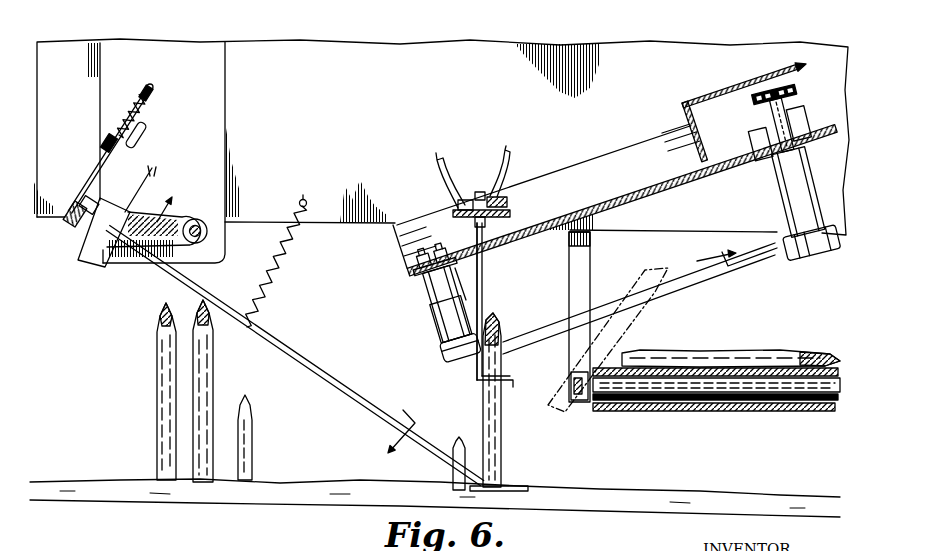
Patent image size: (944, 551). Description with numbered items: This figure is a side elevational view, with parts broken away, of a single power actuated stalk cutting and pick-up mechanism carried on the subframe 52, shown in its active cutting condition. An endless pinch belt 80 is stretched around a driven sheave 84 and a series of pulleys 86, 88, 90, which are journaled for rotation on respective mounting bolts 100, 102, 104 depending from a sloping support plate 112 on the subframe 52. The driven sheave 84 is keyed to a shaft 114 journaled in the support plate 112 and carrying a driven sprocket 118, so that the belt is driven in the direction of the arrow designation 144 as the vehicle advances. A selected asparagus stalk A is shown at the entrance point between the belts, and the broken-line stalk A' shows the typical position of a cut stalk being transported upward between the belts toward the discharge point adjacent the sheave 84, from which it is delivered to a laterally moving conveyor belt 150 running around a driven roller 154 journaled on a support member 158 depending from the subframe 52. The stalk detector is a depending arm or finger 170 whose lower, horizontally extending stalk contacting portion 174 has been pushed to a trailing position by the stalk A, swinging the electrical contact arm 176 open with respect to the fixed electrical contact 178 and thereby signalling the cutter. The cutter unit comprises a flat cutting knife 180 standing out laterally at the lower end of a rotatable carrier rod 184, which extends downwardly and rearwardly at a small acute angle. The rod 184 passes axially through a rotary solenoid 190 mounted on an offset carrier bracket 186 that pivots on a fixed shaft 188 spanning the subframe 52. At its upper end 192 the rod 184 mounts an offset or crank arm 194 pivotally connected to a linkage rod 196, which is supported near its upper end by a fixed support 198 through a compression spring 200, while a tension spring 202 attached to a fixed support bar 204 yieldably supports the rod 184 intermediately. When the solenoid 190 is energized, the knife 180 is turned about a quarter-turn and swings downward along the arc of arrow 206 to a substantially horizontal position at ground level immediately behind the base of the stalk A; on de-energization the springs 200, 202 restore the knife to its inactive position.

The subframe 52 is at (382, 117).
The endless pinch belt 80 is at (703, 280).
The driven sheave 84 is at (818, 264).
The pulley 86 is at (780, 276).
The pulley 88 is at (445, 347).
The pulley 90 is at (457, 335).
The mounting bolt 100 is at (770, 192).
The mounting bolt 102 is at (425, 298).
The mounting bolt 104 is at (457, 280).
The sloping support plate 112 is at (627, 188).
The shaft 114 is at (797, 165).
The driven sprocket 118 is at (787, 95).
The arrow designation 144 is at (697, 261).
The conveyor belt 150 is at (712, 412).
The driven roller 154 is at (625, 408).
The support member 158 is at (590, 256).
The depending arm (finger) 170 is at (483, 290).
The stalk contacting portion 174 is at (513, 382).
The electrical contact arm 176 is at (512, 198).
The fixed electrical contact 178 is at (460, 207).
The flat cutting knife 180 is at (517, 484).
The rotatable carrier rod 184 is at (278, 350).
The offset carrier bracket 186 is at (177, 218).
The fixed shaft 188 is at (222, 234).
The rotary solenoid 190 is at (92, 250).
The upper end of carrier rod 192 is at (67, 200).
The offset (crank) arm 194 is at (63, 220).
The linkage rod 196 is at (102, 143).
The fixed support 198 is at (147, 131).
The compression spring 200 is at (150, 100).
The tension spring 202 is at (286, 265).
The fixed support bar 204 is at (306, 200).
The arrow 206 is at (400, 418).
The asparagus stalk A is at (481, 395).
The cut asparagus stalk (broken-line position) A' is at (608, 340).